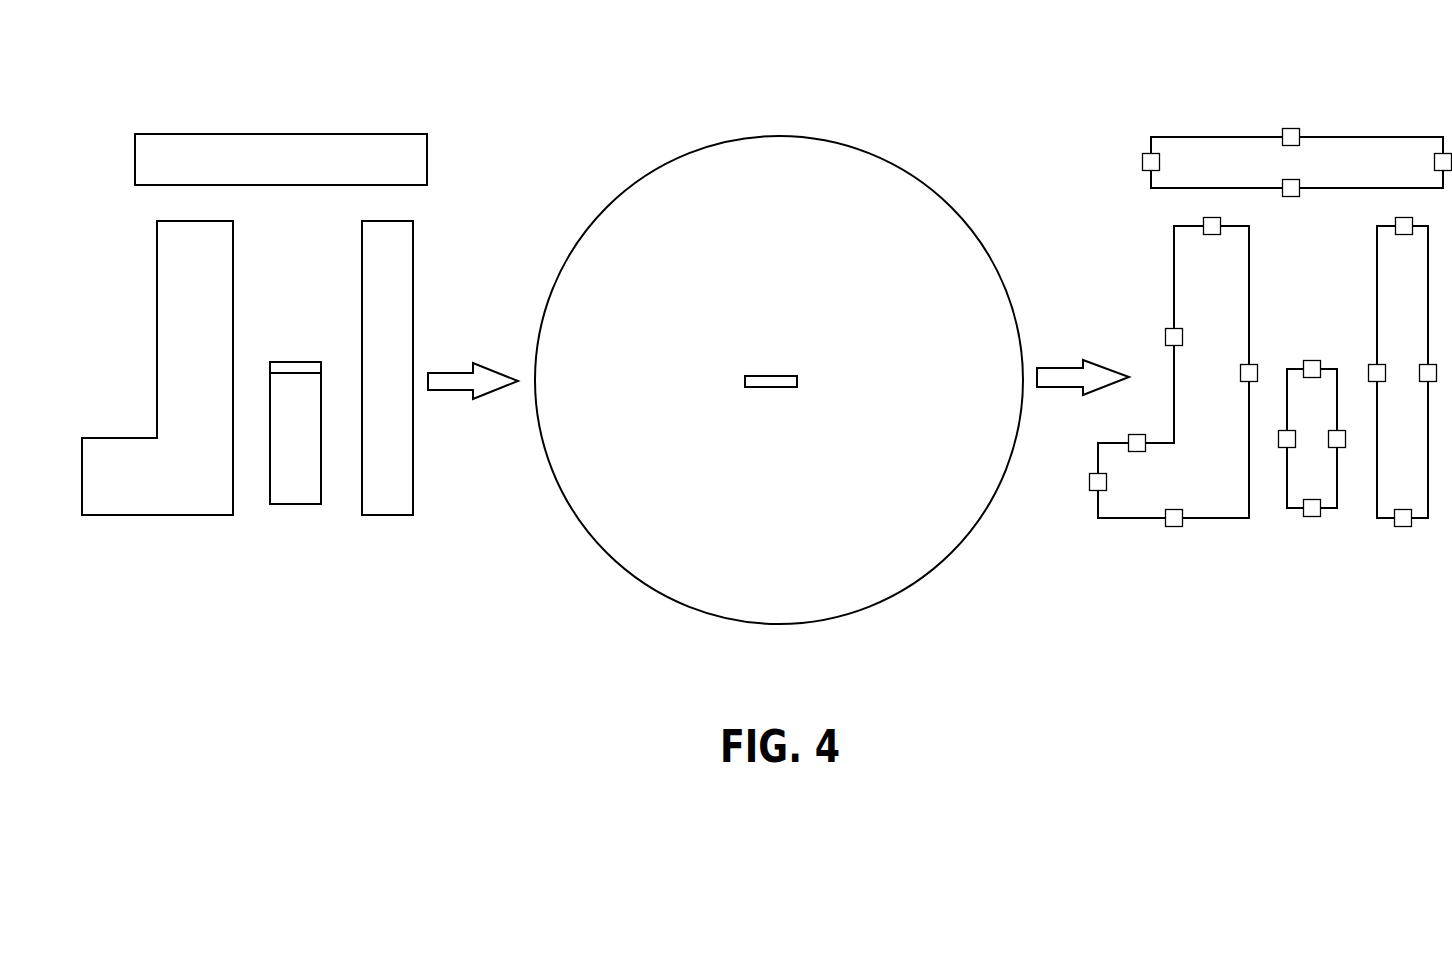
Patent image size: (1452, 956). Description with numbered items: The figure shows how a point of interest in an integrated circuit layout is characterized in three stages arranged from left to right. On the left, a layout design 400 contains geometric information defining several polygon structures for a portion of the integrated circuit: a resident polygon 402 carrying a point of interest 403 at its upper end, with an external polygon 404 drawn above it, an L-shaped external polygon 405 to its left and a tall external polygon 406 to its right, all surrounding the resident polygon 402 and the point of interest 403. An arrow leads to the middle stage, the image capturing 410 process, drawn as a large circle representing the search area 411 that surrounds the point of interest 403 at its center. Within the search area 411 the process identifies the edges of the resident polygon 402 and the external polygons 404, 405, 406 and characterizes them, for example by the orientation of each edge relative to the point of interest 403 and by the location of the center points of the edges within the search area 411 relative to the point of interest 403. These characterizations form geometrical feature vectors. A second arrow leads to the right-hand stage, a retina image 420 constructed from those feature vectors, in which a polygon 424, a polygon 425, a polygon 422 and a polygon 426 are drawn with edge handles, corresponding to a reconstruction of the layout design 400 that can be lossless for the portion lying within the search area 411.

The layout design 400 is at (400, 57).
The resident polygon 402 is at (294, 507).
The point of interest 403 is at (794, 410).
The external polygon 404 is at (281, 159).
The external polygon 405 is at (157, 368).
The external polygon 406 is at (380, 518).
The image capturing 410 is at (882, 61).
The search area 411 is at (779, 380).
The retina image 420 is at (1388, 66).
The polygon 422 is at (1293, 513).
The polygon 424 is at (1297, 163).
The polygon 425 is at (1174, 372).
The polygon 426 is at (1385, 522).